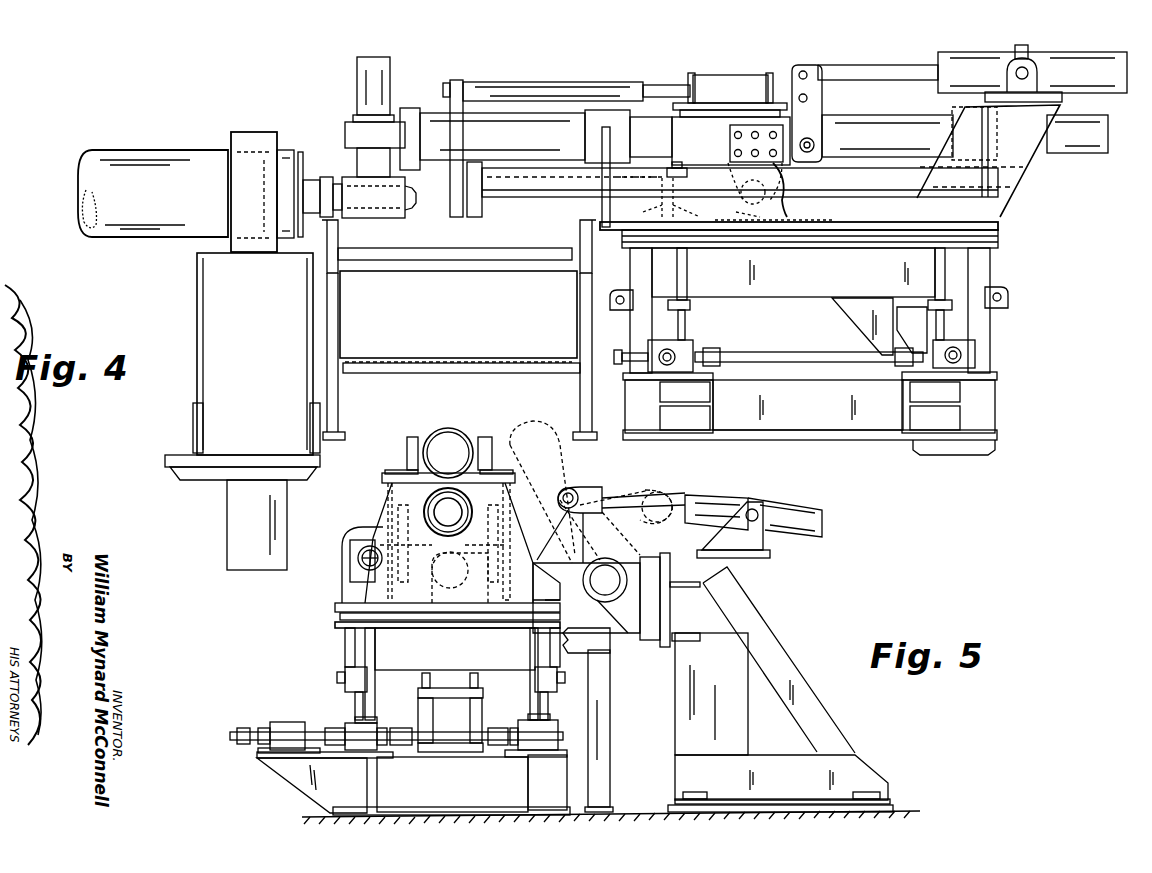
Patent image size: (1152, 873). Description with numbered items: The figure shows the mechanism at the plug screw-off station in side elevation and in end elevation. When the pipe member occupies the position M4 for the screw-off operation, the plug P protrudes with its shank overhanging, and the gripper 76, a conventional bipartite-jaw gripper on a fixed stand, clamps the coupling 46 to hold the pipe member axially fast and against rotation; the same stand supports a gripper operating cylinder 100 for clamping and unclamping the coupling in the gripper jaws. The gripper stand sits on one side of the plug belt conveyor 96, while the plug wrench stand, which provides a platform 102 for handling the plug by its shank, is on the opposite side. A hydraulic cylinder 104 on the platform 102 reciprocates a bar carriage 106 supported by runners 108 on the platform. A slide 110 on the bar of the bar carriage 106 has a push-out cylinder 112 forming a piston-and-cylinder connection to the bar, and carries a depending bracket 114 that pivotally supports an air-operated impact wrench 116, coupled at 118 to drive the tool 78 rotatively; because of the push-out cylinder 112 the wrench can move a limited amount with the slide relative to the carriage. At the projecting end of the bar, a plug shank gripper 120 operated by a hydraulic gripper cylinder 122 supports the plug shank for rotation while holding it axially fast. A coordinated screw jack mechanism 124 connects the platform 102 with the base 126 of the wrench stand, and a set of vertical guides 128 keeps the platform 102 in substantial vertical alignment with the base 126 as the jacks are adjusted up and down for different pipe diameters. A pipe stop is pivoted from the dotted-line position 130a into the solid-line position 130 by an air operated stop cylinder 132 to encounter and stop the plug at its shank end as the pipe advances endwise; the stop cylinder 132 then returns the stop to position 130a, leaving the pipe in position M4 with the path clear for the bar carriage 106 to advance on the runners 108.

In FIG. 4, the pipe member position M4 is at (148, 150).
In FIG. 4, the gripper 76 is at (243, 131).
In FIG. 4, the coupling 46 is at (288, 150).
In FIG. 4, the plug P is at (303, 165).
In FIG. 4, the hydraulic gripper cylinder 122 is at (357, 106).
In FIG. 4, the plug shank gripper 120 is at (382, 220).
In FIG. 4, the plug belt conveyor 96 is at (376, 248).
In FIG. 4, the tool 78 is at (515, 212).
In FIG. 4, the bar carriage 106 is at (648, 82).
In FIG. 4, the push-out cylinder 112 is at (727, 74).
In FIG. 4, the slide 110 is at (730, 115).
In FIG. 4, the hydraulic cylinder 104 is at (988, 52).
In FIG. 4, the coupling point 118 is at (658, 192).
In FIG. 4, the air-operated impact wrench 116 is at (745, 193).
In FIG. 4, the depending bracket 114 is at (775, 193).
In FIG. 4, the runners 108 is at (876, 214).
In FIG. 5, the runners 108 is at (522, 628).
In FIG. 4, the platform 102 is at (872, 249).
In FIG. 5, the platform 102 is at (425, 628).
In FIG. 4, the screw jack mechanism 124 is at (992, 318).
In FIG. 5, the screw jack mechanism 124 is at (348, 722).
In FIG. 4, the vertical guides 128 is at (863, 326).
In FIG. 5, the vertical guides 128 is at (470, 714).
In FIG. 4, the base 126 is at (920, 440).
In FIG. 5, the base 126 is at (447, 757).
In FIG. 4, the gripper operating cylinder 100 is at (228, 505).
In FIG. 5, the pipe stop 130 is at (437, 515).
In FIG. 5, the pipe stop dotted-line position 130a is at (565, 468).
In FIG. 5, the air operated stop cylinder 132 is at (793, 537).